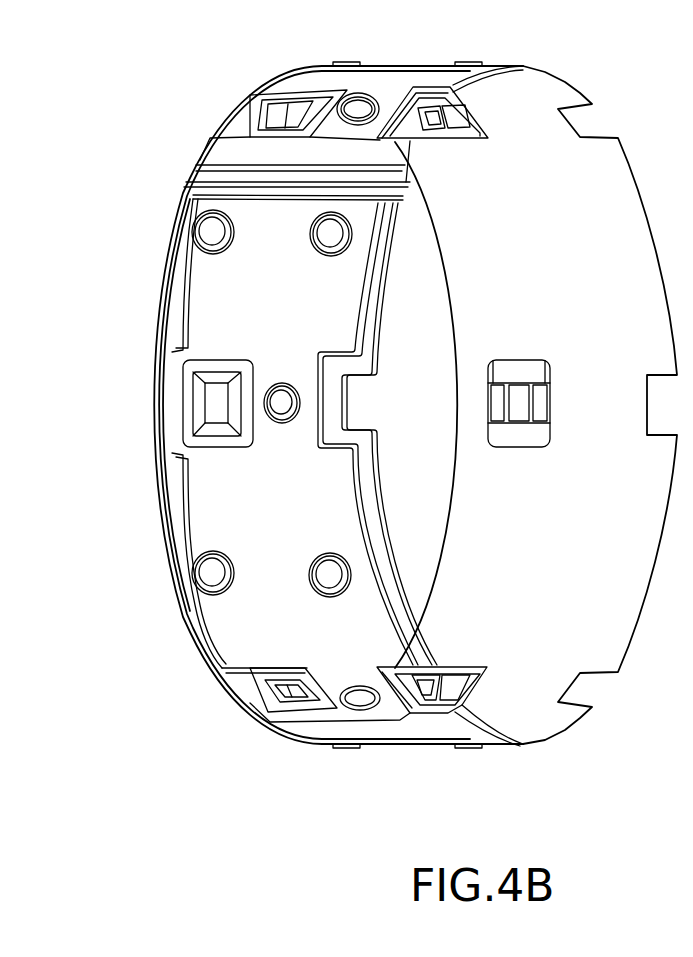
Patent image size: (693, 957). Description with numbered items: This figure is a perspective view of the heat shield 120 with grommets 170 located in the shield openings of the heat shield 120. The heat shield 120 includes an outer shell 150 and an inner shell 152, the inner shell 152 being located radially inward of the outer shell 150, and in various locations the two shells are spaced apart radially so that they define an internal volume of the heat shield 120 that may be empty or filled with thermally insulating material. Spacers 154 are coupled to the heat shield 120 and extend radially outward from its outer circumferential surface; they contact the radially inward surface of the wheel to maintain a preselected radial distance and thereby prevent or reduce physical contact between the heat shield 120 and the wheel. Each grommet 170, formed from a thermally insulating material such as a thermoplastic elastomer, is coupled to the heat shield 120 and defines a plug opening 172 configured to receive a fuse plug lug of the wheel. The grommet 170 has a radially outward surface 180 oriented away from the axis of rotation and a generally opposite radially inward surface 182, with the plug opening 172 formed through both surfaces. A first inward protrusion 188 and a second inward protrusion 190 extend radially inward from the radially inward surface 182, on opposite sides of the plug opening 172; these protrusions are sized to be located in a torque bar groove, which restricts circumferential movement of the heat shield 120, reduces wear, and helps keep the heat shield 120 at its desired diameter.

The heat shield 120 is at (196, 128).
The outer shell 150 is at (294, 267).
The inner shell 152 is at (577, 589).
The spacers 154 is at (207, 226).
The grommet 170 is at (174, 407).
The plug opening 172 is at (228, 381).
The radially outward surface 180 is at (222, 448).
The radially inward surface 182 is at (522, 378).
The first inward protrusion 188 is at (469, 126).
The second inward protrusion 190 is at (498, 395).